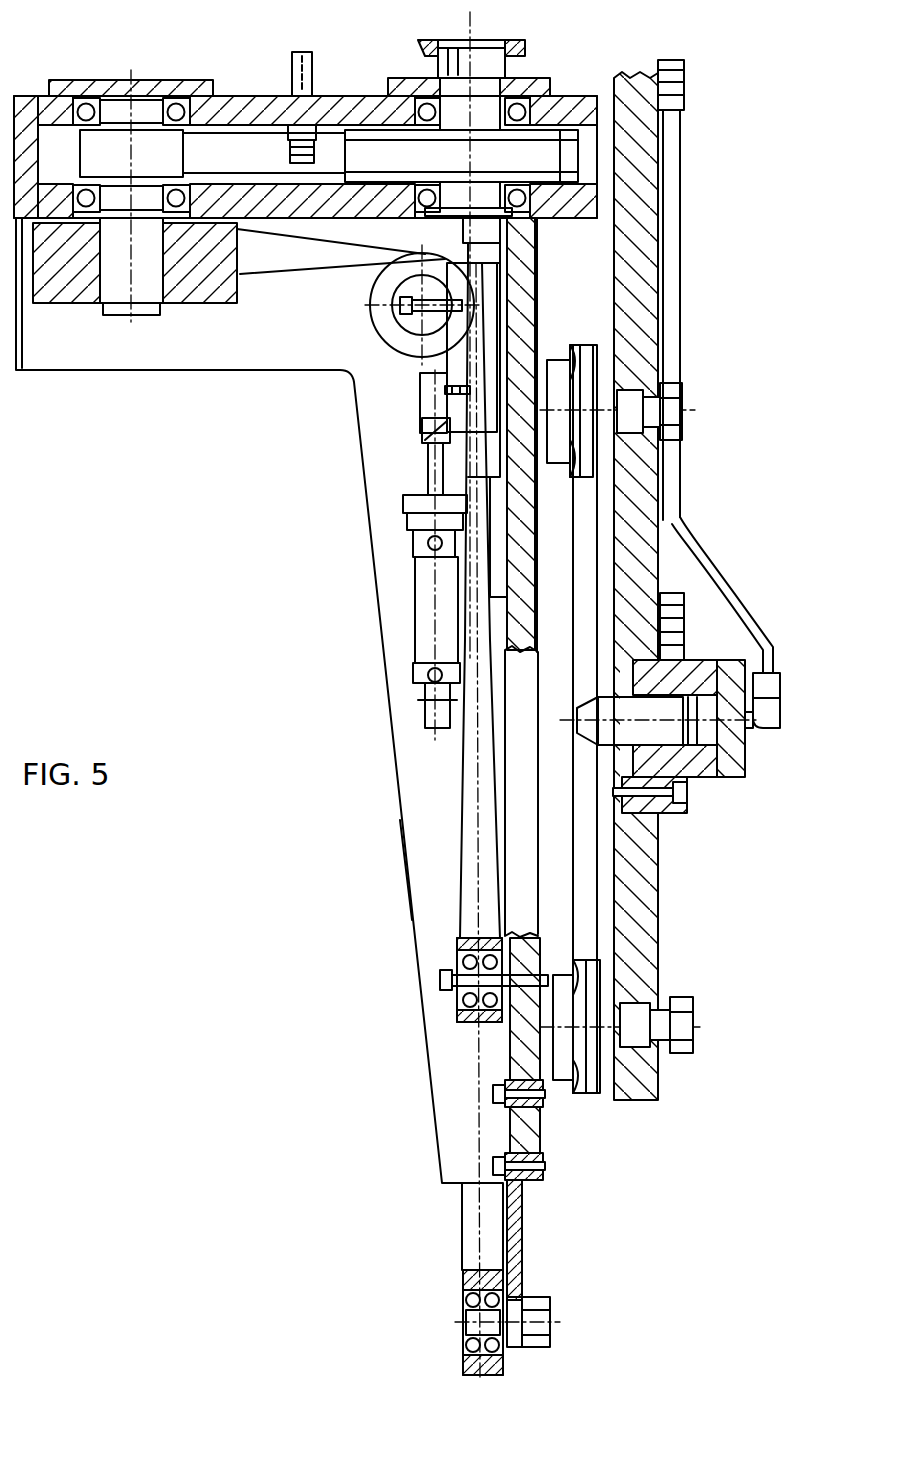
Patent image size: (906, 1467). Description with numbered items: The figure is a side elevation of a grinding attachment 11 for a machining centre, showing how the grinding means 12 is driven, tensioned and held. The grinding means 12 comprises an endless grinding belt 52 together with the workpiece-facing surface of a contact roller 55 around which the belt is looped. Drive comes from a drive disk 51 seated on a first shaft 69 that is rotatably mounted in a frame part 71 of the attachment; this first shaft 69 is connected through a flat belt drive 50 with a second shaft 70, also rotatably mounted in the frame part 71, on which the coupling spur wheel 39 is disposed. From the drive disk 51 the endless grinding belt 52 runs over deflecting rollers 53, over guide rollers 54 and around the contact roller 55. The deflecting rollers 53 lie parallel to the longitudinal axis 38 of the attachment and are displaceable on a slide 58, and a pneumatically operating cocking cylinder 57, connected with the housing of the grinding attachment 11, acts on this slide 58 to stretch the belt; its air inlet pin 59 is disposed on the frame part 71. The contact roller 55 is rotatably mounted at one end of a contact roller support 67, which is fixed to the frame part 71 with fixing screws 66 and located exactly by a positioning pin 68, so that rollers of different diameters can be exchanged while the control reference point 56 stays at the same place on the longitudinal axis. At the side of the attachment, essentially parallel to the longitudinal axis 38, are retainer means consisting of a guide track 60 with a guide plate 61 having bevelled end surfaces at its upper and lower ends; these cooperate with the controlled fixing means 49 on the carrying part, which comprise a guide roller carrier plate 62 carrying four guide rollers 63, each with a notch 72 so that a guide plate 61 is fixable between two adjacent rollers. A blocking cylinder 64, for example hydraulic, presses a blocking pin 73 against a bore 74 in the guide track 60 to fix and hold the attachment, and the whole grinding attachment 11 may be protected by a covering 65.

The grinding attachment 11 is at (372, 590).
The grinding means 12 is at (456, 1250).
The longitudinal axis 38 is at (472, 25).
The coupling spur wheel 39 is at (522, 56).
The fixing means 49 is at (664, 205).
The flat belt drive 50 is at (245, 155).
The drive disk 51 is at (68, 303).
The endless grinding belt 52 is at (295, 258).
The deflecting rollers 53 is at (388, 325).
The guide rollers 54 is at (455, 955).
The contact roller 55 is at (465, 1365).
The control reference point 56 is at (500, 1378).
The cocking cylinder 57 is at (422, 623).
The slide 58 is at (460, 408).
The air inlet pin 59 is at (302, 72).
The guide track 60 is at (578, 508).
The guide plate 61 is at (585, 343).
The guide roller carrier plate 62 is at (636, 562).
The guide rollers 63 is at (600, 378).
The blocking cylinder 64 is at (745, 752).
The covering 65 is at (405, 858).
The fixing screws 66 is at (535, 1165).
The contact roller support 67 is at (515, 1250).
The positioning pin 68 is at (545, 1127).
The first shaft 69 is at (118, 290).
The second shaft 70 is at (495, 200).
The frame part 71 is at (36, 100).
The notch 72 is at (590, 470).
The blocking pin 73 is at (585, 742).
The bore 74 is at (582, 706).